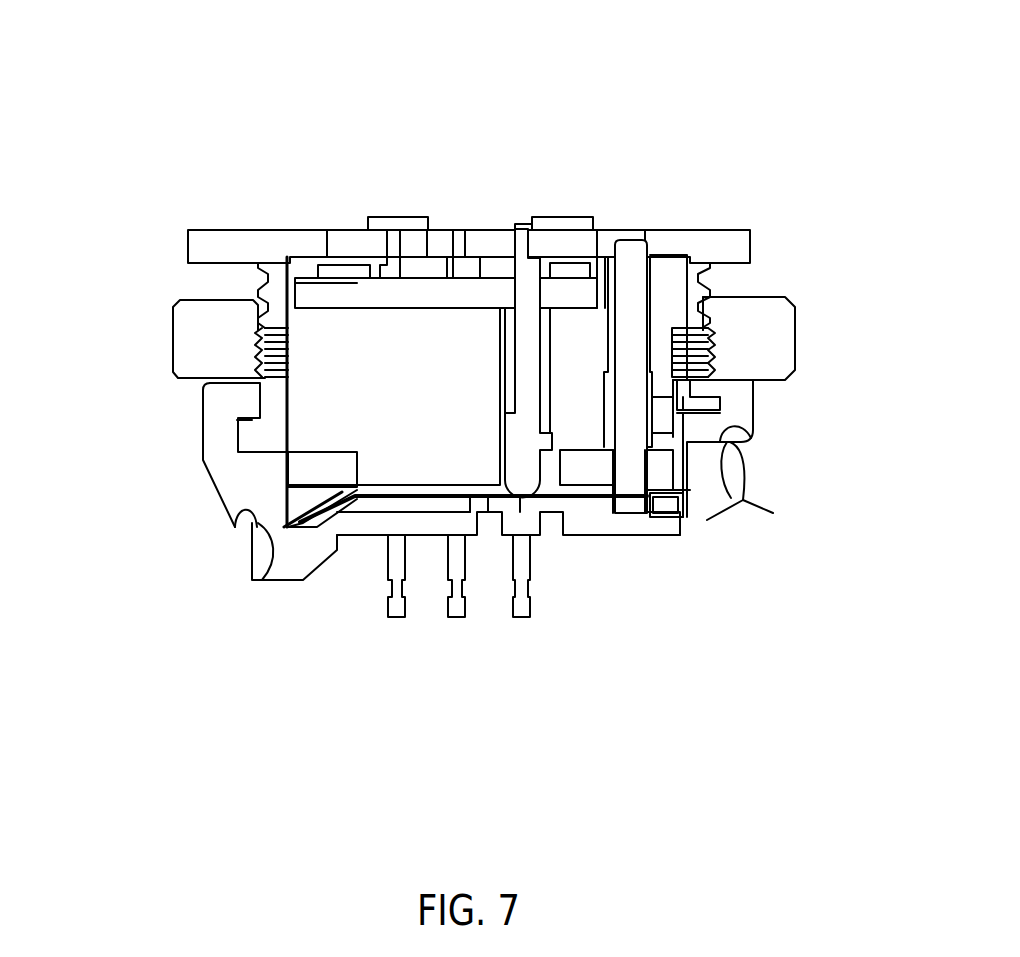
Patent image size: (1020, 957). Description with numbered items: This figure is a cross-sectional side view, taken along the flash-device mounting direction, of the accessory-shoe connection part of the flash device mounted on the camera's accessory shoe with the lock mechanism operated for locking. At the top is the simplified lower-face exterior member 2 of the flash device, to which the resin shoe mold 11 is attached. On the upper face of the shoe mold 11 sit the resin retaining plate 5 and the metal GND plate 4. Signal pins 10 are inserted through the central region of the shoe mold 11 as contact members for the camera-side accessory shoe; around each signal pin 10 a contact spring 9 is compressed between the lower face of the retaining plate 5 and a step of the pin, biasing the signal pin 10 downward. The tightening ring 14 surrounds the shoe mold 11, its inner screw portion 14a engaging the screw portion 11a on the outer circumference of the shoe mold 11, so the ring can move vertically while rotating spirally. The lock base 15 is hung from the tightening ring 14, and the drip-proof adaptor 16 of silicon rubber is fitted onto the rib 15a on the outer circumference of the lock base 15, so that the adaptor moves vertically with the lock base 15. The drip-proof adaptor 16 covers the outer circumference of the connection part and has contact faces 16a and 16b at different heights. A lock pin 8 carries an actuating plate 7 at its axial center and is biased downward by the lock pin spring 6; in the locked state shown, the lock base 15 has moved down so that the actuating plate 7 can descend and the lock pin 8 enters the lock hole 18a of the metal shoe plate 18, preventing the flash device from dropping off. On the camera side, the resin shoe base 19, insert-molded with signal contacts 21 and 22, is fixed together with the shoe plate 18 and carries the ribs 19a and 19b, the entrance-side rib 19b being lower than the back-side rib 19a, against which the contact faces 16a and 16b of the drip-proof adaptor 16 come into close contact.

The lower-face exterior member 2 is at (258, 245).
The GND plate 4 is at (298, 272).
The retaining plate 5 is at (370, 298).
The lock pin spring 6 is at (655, 280).
The actuating plate 7 is at (780, 352).
The lock pin 8 is at (630, 480).
The contact spring 9 is at (507, 310).
The signal pin 10 is at (393, 493).
The shoe mold 11 is at (340, 375).
The screw portion 11a is at (258, 298).
The tightening ring 14 is at (768, 310).
The screw portion 14a is at (253, 317).
The lock base 15 is at (258, 432).
The rib 15a is at (252, 420).
The drip-proof adaptor 16 is at (243, 468).
The contact face 16a is at (727, 428).
The contact face 16b is at (235, 528).
The shoe plate 18 is at (690, 515).
The lock hole 18a is at (667, 523).
The shoe base 19 is at (335, 548).
The rib 19a is at (743, 500).
The rib 19b is at (265, 580).
The signal contact 21 is at (533, 473).
The signal contact 22 is at (396, 612).